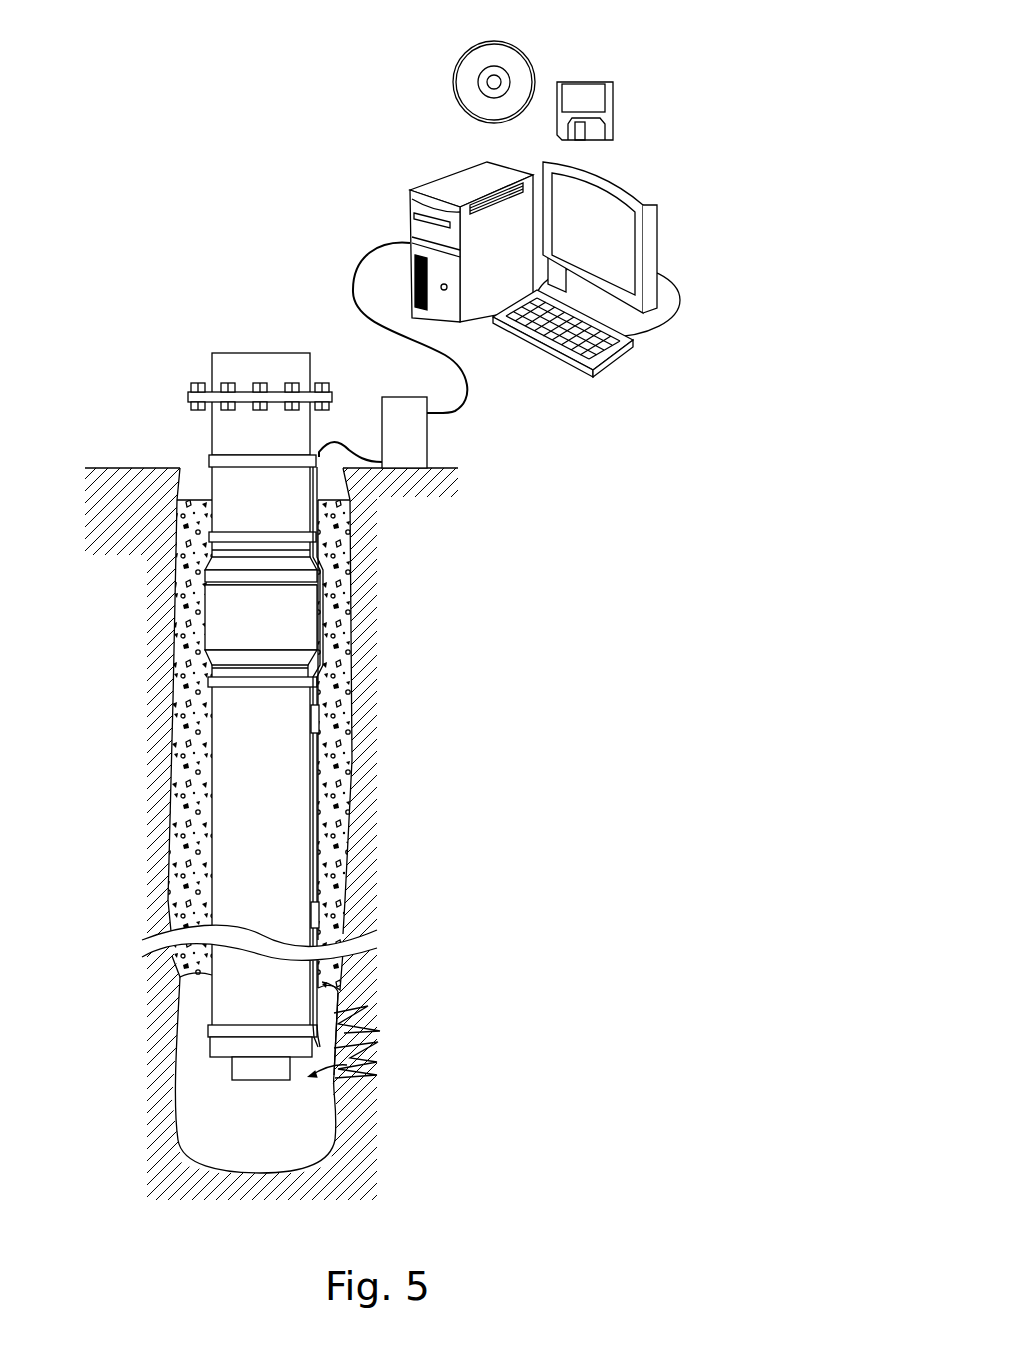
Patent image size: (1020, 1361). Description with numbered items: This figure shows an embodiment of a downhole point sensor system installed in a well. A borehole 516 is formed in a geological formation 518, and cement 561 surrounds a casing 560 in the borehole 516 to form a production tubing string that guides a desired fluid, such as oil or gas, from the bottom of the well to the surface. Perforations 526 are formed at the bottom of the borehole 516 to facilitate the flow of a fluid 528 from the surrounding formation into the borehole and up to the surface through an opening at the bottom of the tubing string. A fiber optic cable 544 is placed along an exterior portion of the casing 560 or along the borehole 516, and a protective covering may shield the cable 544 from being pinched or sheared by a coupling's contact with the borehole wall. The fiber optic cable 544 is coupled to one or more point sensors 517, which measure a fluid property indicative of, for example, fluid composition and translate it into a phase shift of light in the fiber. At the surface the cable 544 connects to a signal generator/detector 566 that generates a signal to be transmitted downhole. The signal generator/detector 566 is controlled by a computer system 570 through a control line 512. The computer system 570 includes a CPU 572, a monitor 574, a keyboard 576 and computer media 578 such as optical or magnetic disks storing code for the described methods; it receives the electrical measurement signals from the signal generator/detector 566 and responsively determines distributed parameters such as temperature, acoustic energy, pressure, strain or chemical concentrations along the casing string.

The control line 512 is at (362, 257).
The borehole 516 is at (192, 473).
The point sensor 517 is at (337, 993).
The geological formation 518 is at (143, 517).
The perforations 526 is at (383, 980).
The fluid 528 is at (256, 1075).
The fiber optic cable 544 is at (347, 440).
The casing 560 is at (298, 628).
The cement 561 is at (330, 713).
The signal generator/detector 566 is at (428, 438).
The computer system 570 is at (698, 99).
The CPU 572 is at (463, 172).
The monitor 574 is at (660, 245).
The keyboard 576 is at (623, 358).
The computer media 578 is at (583, 82).